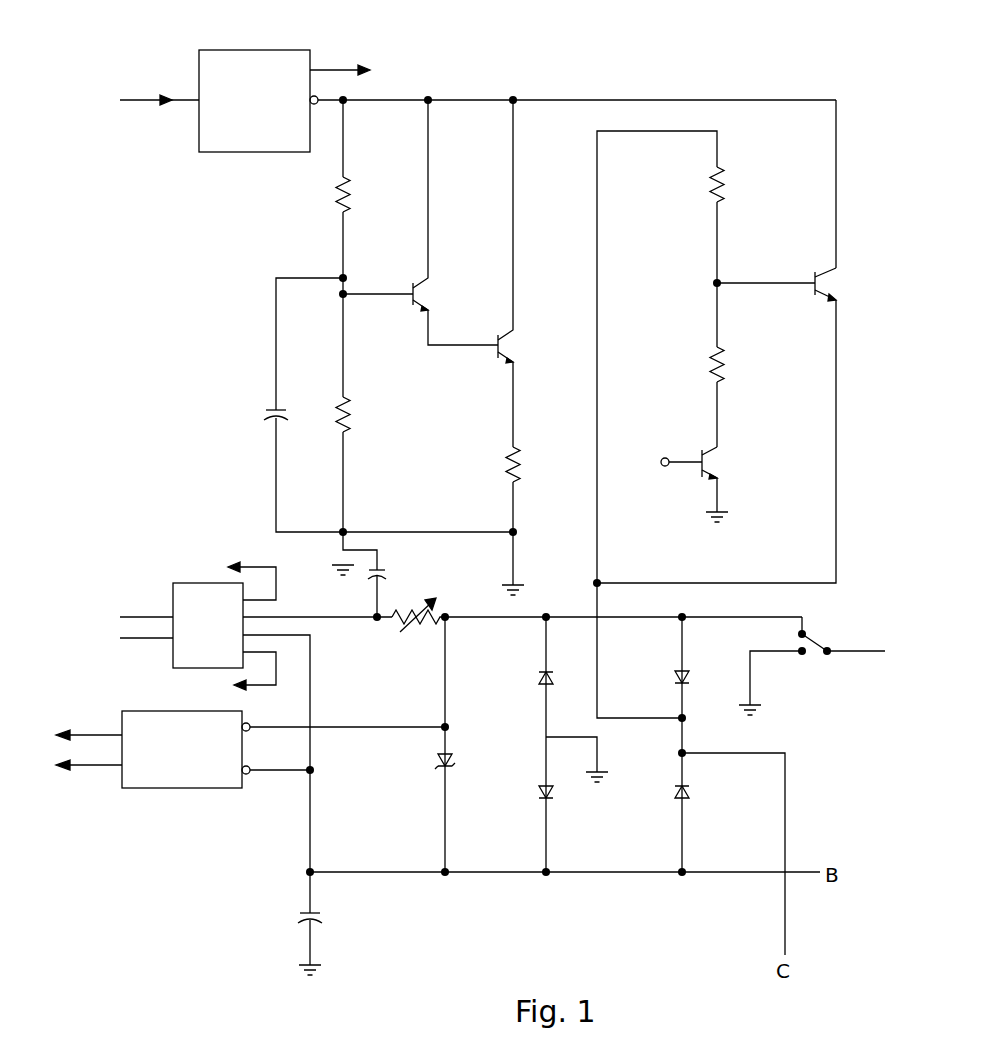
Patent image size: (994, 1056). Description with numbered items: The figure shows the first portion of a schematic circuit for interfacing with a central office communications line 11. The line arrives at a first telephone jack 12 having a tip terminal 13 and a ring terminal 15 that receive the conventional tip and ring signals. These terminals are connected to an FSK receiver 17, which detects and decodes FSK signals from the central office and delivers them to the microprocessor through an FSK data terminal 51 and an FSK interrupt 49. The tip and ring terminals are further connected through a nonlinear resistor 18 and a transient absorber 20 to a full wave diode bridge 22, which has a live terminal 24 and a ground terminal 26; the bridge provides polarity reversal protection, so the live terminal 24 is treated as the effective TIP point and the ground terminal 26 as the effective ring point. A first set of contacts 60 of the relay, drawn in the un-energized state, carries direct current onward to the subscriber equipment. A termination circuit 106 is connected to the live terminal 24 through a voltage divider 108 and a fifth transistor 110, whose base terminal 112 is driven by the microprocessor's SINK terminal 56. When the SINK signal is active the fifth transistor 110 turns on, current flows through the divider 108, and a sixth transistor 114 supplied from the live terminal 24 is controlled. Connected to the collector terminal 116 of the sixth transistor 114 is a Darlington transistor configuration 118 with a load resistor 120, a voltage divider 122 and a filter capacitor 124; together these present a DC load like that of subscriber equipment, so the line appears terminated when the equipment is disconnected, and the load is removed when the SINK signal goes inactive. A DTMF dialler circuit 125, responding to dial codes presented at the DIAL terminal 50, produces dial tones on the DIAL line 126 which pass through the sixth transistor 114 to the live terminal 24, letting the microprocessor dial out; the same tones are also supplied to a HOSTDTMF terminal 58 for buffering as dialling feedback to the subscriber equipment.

The DTMF dialler circuit 125 is at (266, 50).
The DIAL terminal 50 is at (158, 103).
The HOSTDTMF terminal 58 is at (340, 68).
The DIAL line 126 is at (398, 98).
The voltage divider 122 is at (288, 240).
The filter capacitor 124 is at (272, 414).
The Darlington transistor configuration 118 is at (463, 270).
The load resistor 120 is at (516, 462).
The termination circuit 106 is at (543, 158).
The voltage divider 108 is at (652, 242).
The collector terminal 116 is at (748, 282).
The sixth transistor 114 is at (830, 292).
The base terminal 112 is at (680, 458).
The fifth transistor 110 is at (714, 470).
The SINK terminal 56 is at (664, 466).
The first telephone jack 12 is at (188, 584).
The communications line 11 is at (136, 640).
The tip terminal 13 is at (300, 616).
The ring terminal 15 is at (312, 644).
The nonlinear resistor 18 is at (420, 608).
The FSK receiver 17 is at (196, 790).
The FSK data terminal 51 is at (58, 730).
The FSK interrupt 49 is at (60, 770).
The transient absorber 20 is at (442, 760).
The ground terminal 26 is at (545, 737).
The full wave diode bridge 22 is at (620, 688).
The live terminal 24 is at (686, 722).
The first set of contacts 60 is at (822, 620).